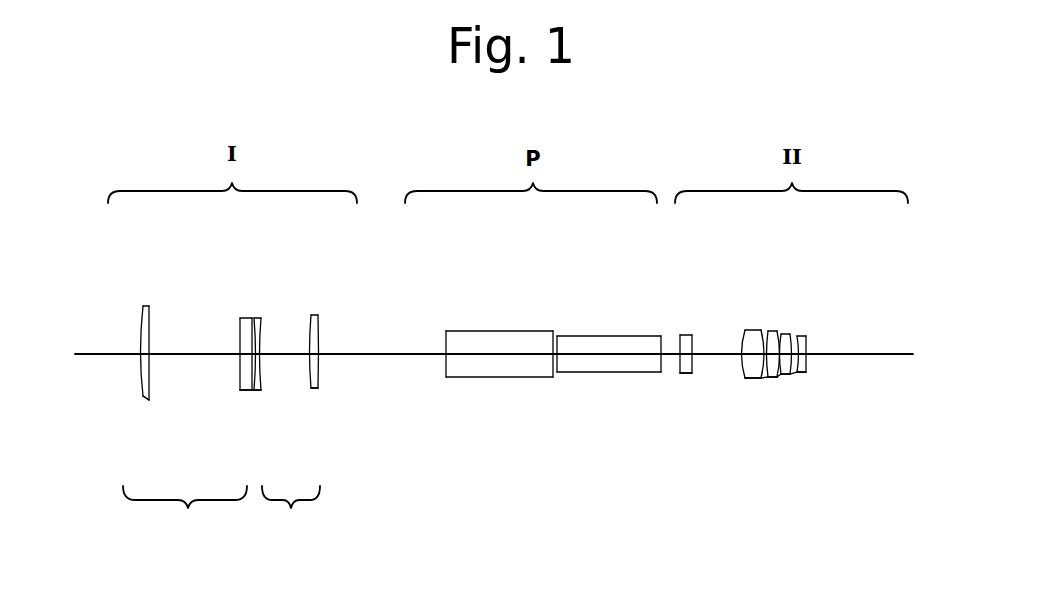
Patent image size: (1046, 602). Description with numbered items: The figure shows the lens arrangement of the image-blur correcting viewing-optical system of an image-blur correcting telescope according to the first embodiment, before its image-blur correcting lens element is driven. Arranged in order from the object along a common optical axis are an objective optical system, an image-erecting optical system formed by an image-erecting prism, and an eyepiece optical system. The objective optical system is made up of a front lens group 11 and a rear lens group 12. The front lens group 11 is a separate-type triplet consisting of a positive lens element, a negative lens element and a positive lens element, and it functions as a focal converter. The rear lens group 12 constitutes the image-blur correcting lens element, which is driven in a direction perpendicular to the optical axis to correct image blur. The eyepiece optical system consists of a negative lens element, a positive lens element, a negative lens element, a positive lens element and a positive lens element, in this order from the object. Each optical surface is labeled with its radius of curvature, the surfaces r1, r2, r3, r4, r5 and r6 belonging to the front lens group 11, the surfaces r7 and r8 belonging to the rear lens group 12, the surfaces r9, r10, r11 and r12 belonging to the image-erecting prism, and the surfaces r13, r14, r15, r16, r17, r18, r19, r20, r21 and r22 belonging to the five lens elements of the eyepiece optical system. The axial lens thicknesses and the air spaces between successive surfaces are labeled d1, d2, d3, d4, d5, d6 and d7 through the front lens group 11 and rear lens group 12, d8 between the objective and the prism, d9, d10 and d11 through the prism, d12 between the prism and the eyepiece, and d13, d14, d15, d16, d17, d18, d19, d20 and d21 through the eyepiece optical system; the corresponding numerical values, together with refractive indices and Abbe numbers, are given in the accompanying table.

The radius of curvature of first surface r1 is at (144, 304).
The radius of curvature of second surface r2 is at (150, 304).
The radius of curvature of third surface r3 is at (240, 318).
The radius of curvature of fourth surface r4 is at (252, 318).
The radius of curvature of fifth surface r5 is at (256, 318).
The radius of curvature of sixth surface r6 is at (261, 318).
The radius of curvature of seventh surface r7 is at (311, 315).
The radius of curvature of eighth surface r8 is at (318, 315).
The radius of curvature of ninth surface r9 is at (447, 331).
The radius of curvature of tenth surface r10 is at (553, 331).
The radius of curvature of eleventh surface r11 is at (556, 336).
The radius of curvature of twelfth surface r12 is at (661, 336).
The radius of curvature of thirteenth surface r13 is at (680, 335).
The radius of curvature of fourteenth surface r14 is at (693, 335).
The radius of curvature of fifteenth surface r15 is at (745, 330).
The radius of curvature of sixteenth surface r16 is at (760, 330).
The radius of curvature of seventeenth surface r17 is at (768, 331).
The radius of curvature of eighteenth surface r18 is at (777, 331).
The radius of curvature of nineteenth surface r19 is at (781, 334).
The radius of curvature of twentieth surface r20 is at (790, 334).
The radius of curvature of twenty-first surface r21 is at (797, 336).
The radius of curvature of twenty-second surface r22 is at (806, 337).
The lens thickness or space d1 is at (143, 398).
The lens thickness or space d2 is at (190, 357).
The lens thickness or space d3 is at (240, 392).
The lens thickness or space d4 is at (257, 392).
The lens thickness or space d5 is at (262, 391).
The lens thickness or space d6 is at (287, 357).
The lens thickness or space d7 is at (317, 389).
The lens thickness or space d8 is at (382, 357).
The lens thickness or space d9 is at (480, 357).
The lens thickness or space d10 is at (554, 357).
The lens thickness or space d11 is at (613, 357).
The lens thickness or space d12 is at (661, 357).
The lens thickness or space d13 is at (684, 374).
The lens thickness or space d14 is at (718, 357).
The lens thickness or space d15 is at (747, 378).
The lens thickness or space d16 is at (760, 378).
The lens thickness or space d17 is at (778, 378).
The lens thickness or space d18 is at (787, 378).
The lens thickness or space d19 is at (795, 378).
The lens thickness or space d20 is at (800, 377).
The lens thickness or space d21 is at (807, 373).
The front lens group 11 is at (185, 513).
The rear lens group 12 is at (291, 513).